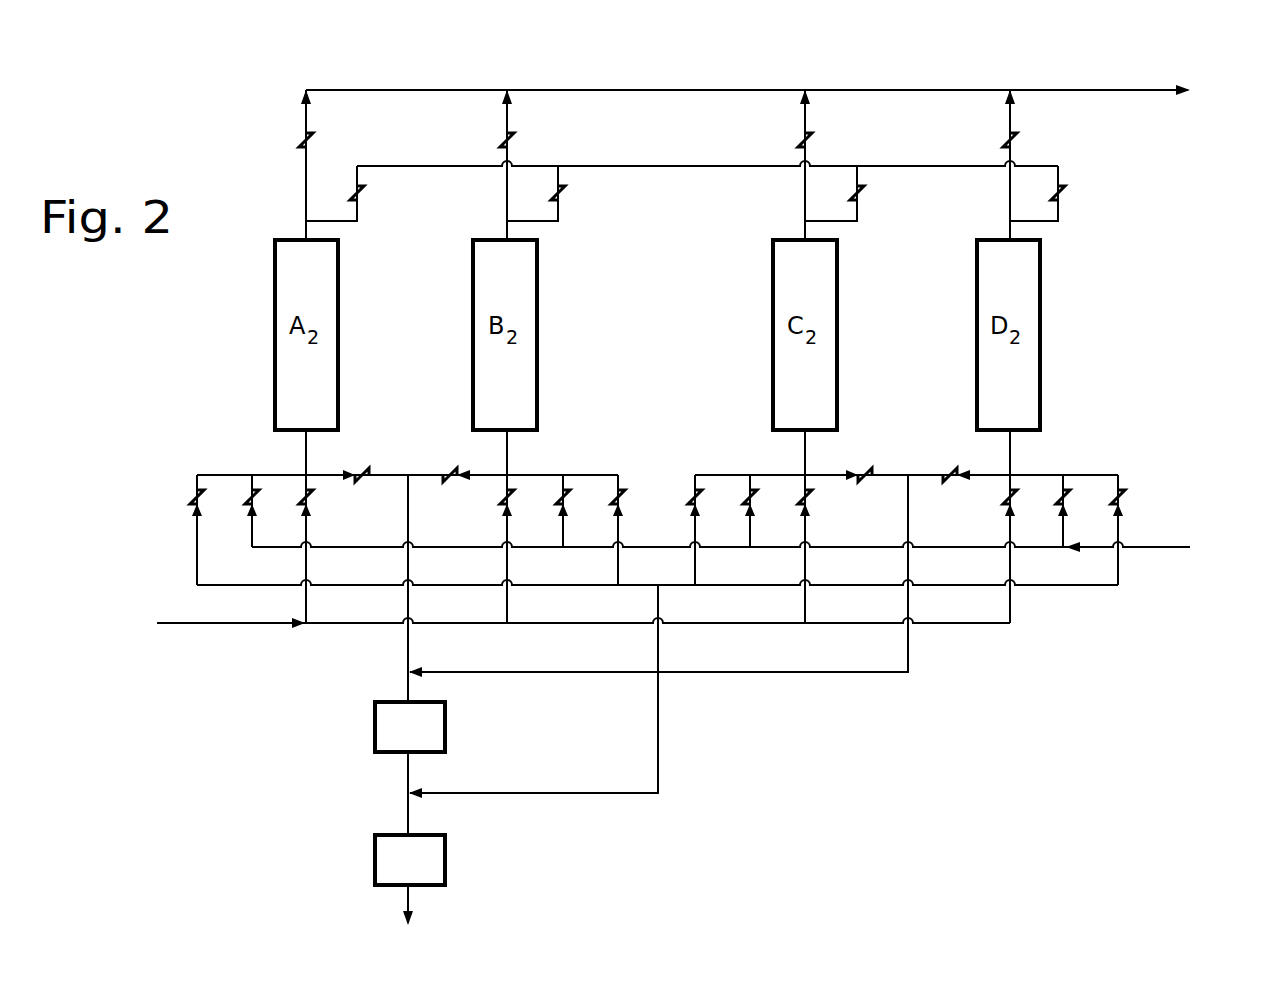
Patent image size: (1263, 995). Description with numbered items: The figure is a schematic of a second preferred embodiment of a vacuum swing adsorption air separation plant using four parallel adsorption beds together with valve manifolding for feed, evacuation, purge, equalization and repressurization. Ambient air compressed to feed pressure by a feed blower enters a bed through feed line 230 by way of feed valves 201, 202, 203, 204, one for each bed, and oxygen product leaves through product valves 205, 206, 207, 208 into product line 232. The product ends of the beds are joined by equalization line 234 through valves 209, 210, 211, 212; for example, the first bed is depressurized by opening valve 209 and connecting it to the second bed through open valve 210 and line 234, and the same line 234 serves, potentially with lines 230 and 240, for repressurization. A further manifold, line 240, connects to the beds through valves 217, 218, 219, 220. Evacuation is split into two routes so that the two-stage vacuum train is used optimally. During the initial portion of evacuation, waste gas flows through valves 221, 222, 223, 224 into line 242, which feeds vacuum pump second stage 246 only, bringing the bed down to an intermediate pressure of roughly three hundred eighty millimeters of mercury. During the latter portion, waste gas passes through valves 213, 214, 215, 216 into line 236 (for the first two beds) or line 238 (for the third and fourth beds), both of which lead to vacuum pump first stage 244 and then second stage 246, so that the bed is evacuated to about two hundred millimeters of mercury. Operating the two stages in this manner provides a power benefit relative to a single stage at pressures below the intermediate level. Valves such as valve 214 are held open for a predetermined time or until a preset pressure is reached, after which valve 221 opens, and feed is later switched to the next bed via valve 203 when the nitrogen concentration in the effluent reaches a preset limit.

The feed valve 201 is at (312, 498).
The feed valve 202 is at (503, 498).
The feed valve 203 is at (811, 498).
The feed valve 204 is at (1004, 498).
The product valve 205 is at (304, 140).
The product valve 206 is at (505, 140).
The product valve 207 is at (808, 143).
The product valve 208 is at (1013, 143).
The equalization valve 209 is at (365, 195).
The equalization valve 210 is at (565, 195).
The equalization valve 211 is at (863, 197).
The equalization valve 212 is at (1066, 190).
The evacuation valve 213 is at (362, 469).
The evacuation valve 214 is at (451, 469).
The evacuation valve 215 is at (867, 469).
The evacuation valve 216 is at (952, 469).
The purge valve 217 is at (248, 502).
The purge valve 218 is at (560, 502).
The purge valve 219 is at (750, 503).
The purge valve 220 is at (1066, 500).
The second-stage evacuation valve 221 is at (193, 500).
The second-stage evacuation valve 222 is at (616, 500).
The second-stage evacuation valve 223 is at (693, 502).
The second-stage evacuation valve 224 is at (1122, 500).
The feed line 230 is at (222, 627).
The product line 232 is at (1050, 88).
The equalization line 234 is at (913, 168).
The evacuation line 236 is at (405, 632).
The evacuation line 238 is at (910, 642).
The repressurization line 240 is at (1143, 547).
The evacuation line 242 is at (660, 718).
The vacuum pump first stage 244 is at (447, 732).
The vacuum pump second stage 246 is at (447, 865).